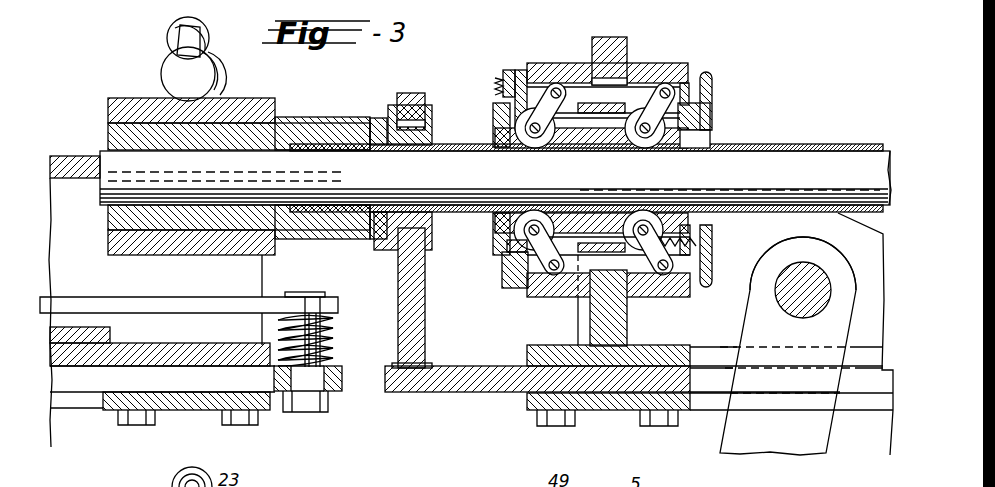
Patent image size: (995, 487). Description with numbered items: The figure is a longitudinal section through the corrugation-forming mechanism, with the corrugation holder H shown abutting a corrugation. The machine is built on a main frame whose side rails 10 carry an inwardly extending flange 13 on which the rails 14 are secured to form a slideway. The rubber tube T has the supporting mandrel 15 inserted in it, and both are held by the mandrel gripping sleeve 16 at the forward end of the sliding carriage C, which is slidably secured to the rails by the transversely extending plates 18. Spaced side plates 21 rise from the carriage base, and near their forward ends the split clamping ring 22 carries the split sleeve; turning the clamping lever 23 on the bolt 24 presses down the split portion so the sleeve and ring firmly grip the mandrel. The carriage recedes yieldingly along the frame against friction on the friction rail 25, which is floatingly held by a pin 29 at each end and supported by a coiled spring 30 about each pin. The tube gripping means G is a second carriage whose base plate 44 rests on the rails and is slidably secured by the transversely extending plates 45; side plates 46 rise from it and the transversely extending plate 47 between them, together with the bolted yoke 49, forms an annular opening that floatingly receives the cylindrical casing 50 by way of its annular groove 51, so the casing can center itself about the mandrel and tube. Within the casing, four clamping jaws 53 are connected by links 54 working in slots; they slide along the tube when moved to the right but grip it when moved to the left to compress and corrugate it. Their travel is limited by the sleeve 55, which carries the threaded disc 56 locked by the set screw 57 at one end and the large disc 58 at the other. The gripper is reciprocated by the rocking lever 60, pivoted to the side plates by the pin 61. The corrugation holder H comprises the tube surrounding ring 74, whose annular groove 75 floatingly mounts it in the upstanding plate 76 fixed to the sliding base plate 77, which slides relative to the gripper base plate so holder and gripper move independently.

The side rails 10 is at (880, 444).
The inwardly extending flange 13 is at (490, 404).
The plates or rails 14 is at (384, 377).
The supporting mandrel 15 is at (836, 160).
The mandrel gripping sleeve 16 is at (298, 118).
The transversely extending plates 18 is at (198, 402).
The side plates 21 is at (250, 268).
The split clamping ring 22 is at (135, 100).
The clamping lever 23 is at (178, 28).
The bolt 24 is at (208, 54).
The friction rail 25 is at (232, 298).
The pin 29 is at (322, 292).
The coiled spring 30 is at (332, 338).
The base plate 44 is at (530, 346).
The transversely extending plates 45 is at (592, 412).
The side plates 46 is at (798, 259).
The transversely extending plate 47 is at (628, 321).
The yoke 49 is at (612, 37).
The cylindrical casing 50 is at (578, 62).
The annular groove 51 is at (613, 80).
The clamping jaws 53 is at (495, 142).
The links 54 is at (538, 64).
The sleeve 55 is at (578, 294).
The large nut or threaded disc 56 is at (500, 266).
The set screw 57 is at (500, 88).
The large disc 58 is at (714, 80).
The rocking lever 60 is at (783, 455).
The pin 61 is at (784, 286).
The tube surrounding ring 74 is at (432, 228).
The annular groove 75 is at (412, 102).
The upstanding plate 76 is at (396, 283).
The sliding base plate 77 is at (476, 366).
The sliding carriage C is at (104, 130).
The tube gripping means G is at (668, 56).
The corrugation holder H is at (398, 88).
The rubber tube T is at (768, 150).